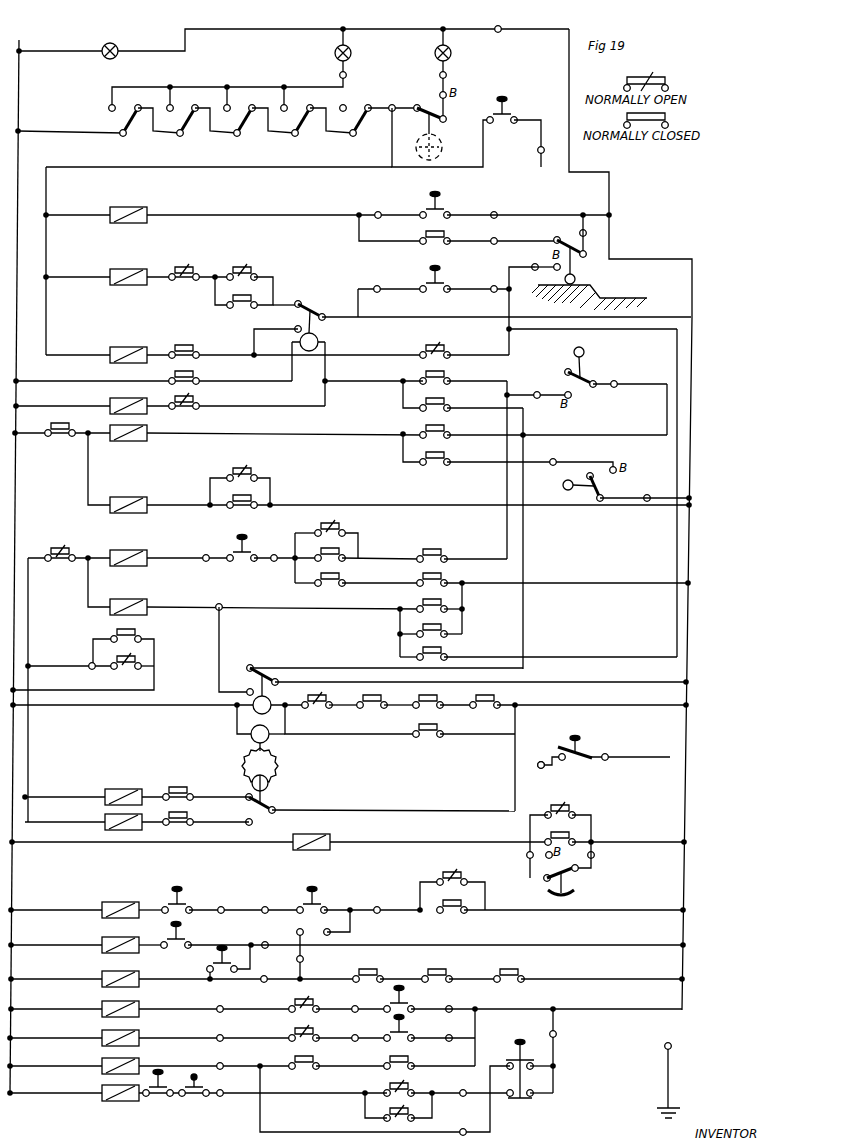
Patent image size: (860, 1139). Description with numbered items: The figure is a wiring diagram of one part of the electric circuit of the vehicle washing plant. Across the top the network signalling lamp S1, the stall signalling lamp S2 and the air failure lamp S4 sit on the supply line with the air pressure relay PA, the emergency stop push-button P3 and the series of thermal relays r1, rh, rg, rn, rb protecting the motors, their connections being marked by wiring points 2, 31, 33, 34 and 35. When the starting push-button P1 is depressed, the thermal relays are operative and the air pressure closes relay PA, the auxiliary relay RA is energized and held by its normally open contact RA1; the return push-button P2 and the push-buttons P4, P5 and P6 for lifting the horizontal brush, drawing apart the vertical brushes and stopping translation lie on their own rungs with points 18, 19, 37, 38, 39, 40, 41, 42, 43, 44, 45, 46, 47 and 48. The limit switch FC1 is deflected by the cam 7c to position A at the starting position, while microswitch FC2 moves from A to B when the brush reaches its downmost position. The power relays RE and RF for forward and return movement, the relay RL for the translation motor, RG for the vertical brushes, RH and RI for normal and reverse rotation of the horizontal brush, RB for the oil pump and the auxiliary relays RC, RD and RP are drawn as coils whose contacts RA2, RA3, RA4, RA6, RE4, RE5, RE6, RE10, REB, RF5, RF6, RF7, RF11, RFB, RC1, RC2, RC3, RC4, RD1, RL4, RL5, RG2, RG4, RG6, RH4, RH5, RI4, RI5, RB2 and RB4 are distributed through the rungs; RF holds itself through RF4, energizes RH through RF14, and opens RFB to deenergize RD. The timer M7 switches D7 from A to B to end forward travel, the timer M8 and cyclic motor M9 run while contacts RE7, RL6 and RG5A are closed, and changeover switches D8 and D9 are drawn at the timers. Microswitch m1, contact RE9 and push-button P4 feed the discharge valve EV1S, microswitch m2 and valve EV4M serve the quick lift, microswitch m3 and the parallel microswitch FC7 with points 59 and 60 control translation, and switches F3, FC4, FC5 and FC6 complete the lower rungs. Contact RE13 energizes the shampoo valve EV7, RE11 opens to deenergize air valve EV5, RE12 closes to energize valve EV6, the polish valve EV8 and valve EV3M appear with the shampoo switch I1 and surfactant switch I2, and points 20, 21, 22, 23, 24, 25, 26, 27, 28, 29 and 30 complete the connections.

The supply line terminal 2 is at (456, 534).
The terminal 18 is at (494, 233).
The terminal 19 is at (531, 259).
The terminal 20 is at (615, 376).
The lever 21 is at (532, 387).
The transverse shaft 22 is at (551, 454).
The terminal 23 is at (519, 856).
The terminal 24 is at (219, 902).
The terminal 25 is at (263, 971).
The mechanical limit stop 26 is at (219, 1058).
The terminal 27 is at (220, 1085).
The terminal 28 is at (219, 1001).
The terminal 29 is at (218, 1030).
The ground terminal 30 is at (668, 1073).
The terminal 31 is at (551, 151).
The terminal 33 is at (390, 100).
The terminal 34 is at (453, 76).
The terminal 35 is at (353, 76).
The cylinder 37 is at (492, 281).
The terminal 38 is at (375, 281).
The terminal 39 is at (271, 550).
The terminal 40 is at (204, 550).
The cam 41 is at (310, 959).
The terminal 42 is at (375, 902).
The terminal 43 is at (263, 902).
The terminal 44 is at (461, 1085).
The terminal 45 is at (353, 1001).
The terminal 46 is at (354, 1030).
The terminal 47 is at (376, 207).
The terminal 48 is at (462, 1124).
The terminal 59 is at (605, 749).
The terminal 60 is at (540, 773).
The cam 7c is at (588, 300).
The network signalling lamp S1 is at (109, 43).
The stall signalling lamp S2 is at (351, 47).
The air supply failure lamp S4 is at (451, 49).
The air pressure relay PA is at (430, 125).
The starting push-button P1 is at (435, 196).
The return push-button P2 is at (439, 277).
The emergency stop push-button P3 is at (502, 101).
The push-button for lifting horizontal brush P4 is at (317, 902).
The push-button for drawing apart vertical brushes P5 is at (524, 1061).
The push-button stopping translational movement P6 is at (242, 539).
The timer M7 is at (310, 342).
The timer M8 is at (271, 700).
The cyclic motor M9 is at (269, 736).
The changeover switch D7 is at (304, 315).
The change-over switch D8 is at (262, 677).
The change-over switch D9 is at (256, 808).
The limit switch FC1 is at (575, 252).
The microswitch FC2 is at (572, 369).
The limit switch FC4 is at (560, 875).
The limit switch FC5 is at (158, 1093).
The limit switch FC6 is at (194, 1094).
The microswitch FC7 is at (565, 756).
The limit switch F3 is at (589, 484).
The shampoo delivery switch I1 is at (401, 997).
The surfactant delivery switch I2 is at (401, 1027).
The microswitch m1 is at (183, 899).
The microswitch m2 is at (176, 942).
The microswitch m3 is at (222, 962).
The thermal relay r1 is at (118, 113).
The thermal relay rh is at (176, 113).
The thermal relay rg is at (233, 113).
The thermal relay rn is at (290, 113).
The thermal relay rb is at (349, 113).
The auxiliary relay RA is at (128, 208).
The power relay RE is at (128, 270).
The power relay RF is at (128, 348).
The auxiliary relay RP is at (128, 399).
The auxiliary relay RC is at (128, 426).
The auxiliary relay RD is at (128, 498).
The power relay RL is at (128, 551).
The power relay RG is at (128, 600).
The power relay RH is at (123, 790).
The power relay RI is at (123, 815).
The power relay RB is at (311, 835).
The electromagnetic discharge valve EV1S is at (103, 910).
The solenoid valve EV3M is at (101, 945).
The electromagnetic valve EV4M is at (101, 979).
The shampoo electromagnetic valve EV7 is at (101, 1009).
The polish electromagnetic valve EV8 is at (101, 1038).
The three-way electromagnetic air valve EV5 is at (101, 1066).
The three-way electromagnetic valve EV6 is at (101, 1093).
The normally open contact RA1 is at (435, 244).
The relay contact RA2 is at (338, 317).
The relay contact RA3 is at (329, 522).
The relay contact RA4 is at (432, 648).
The relay contact RA6 is at (428, 695).
The relay contact RE4 is at (240, 296).
The relay contact RE5 is at (184, 343).
The relay contact RE6 is at (437, 968).
The relay contact RE7 is at (317, 695).
The relay contact RE9 is at (452, 886).
The relay contact RE10 is at (561, 818).
The relay contact RE11 is at (303, 1056).
The relay contact RE12 is at (350, 1068).
The relay contact RE13 is at (350, 1040).
The relay contact REB is at (125, 628).
The relay contact RF4 is at (435, 343).
The relay contact RF5 is at (184, 265).
The relay contact RF6 is at (509, 968).
The relay contact RF7 is at (432, 624).
The relay contact RF11 is at (398, 1056).
The relay contact RF14 is at (125, 657).
The relay contact RFB is at (59, 422).
The relay contact RC1 is at (435, 425).
The relay contact RC2 is at (241, 496).
The relay contact RC3 is at (184, 370).
The relay contact RC4 is at (184, 396).
The relay contact RD1 is at (241, 467).
The relay contact RL4 is at (329, 549).
The relay contact RL5 is at (435, 453).
The relay contact RL6 is at (372, 695).
The relay contact RG2 is at (432, 573).
The relay contact RG4 is at (432, 599).
The relay contact RG6 is at (432, 548).
The relay contact RG5A is at (483, 695).
The relay contact RH4 is at (329, 574).
The relay contact RH5 is at (178, 812).
The relay contact RI4 is at (178, 787).
The relay contact RI5 is at (428, 724).
The relay contact RB2 is at (435, 398).
The relay contact RB4 is at (367, 968).